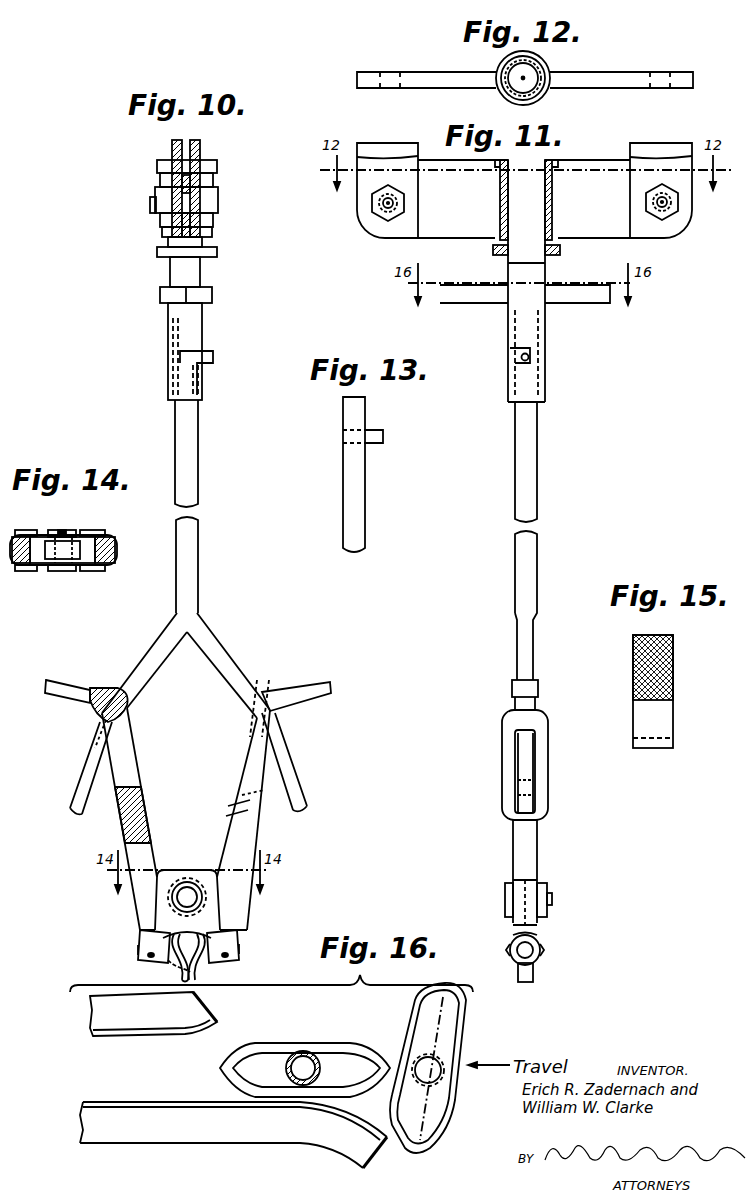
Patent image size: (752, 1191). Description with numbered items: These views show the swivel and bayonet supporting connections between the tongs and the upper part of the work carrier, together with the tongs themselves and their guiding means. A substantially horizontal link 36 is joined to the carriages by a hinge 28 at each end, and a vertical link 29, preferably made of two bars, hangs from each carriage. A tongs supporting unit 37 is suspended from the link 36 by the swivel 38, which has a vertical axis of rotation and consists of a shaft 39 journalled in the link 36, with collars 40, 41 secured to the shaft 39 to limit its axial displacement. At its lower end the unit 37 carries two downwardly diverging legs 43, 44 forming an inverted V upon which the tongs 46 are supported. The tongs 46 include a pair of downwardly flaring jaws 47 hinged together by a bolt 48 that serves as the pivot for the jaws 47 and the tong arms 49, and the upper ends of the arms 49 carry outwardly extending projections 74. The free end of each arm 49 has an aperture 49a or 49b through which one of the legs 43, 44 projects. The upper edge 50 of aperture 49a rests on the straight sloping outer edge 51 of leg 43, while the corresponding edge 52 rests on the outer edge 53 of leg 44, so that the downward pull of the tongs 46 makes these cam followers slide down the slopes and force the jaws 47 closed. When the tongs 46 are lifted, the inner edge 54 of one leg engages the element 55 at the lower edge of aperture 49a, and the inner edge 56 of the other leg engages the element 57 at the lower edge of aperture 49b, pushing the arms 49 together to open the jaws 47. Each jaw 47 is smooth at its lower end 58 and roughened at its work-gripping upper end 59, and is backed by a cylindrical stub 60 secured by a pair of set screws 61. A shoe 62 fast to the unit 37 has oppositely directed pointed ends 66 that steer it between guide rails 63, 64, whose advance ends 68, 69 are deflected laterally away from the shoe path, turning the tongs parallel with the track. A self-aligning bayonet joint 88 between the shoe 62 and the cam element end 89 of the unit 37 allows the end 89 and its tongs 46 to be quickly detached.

In FIG. 10, the hinge 28 is at (146, 209).
In FIG. 11, the hinge 28 is at (353, 213).
In FIG. 10, the vertical link 29 is at (190, 154).
In FIG. 11, the vertical link 29 is at (380, 160).
In FIG. 10, the horizontal link 36 is at (212, 232).
In FIG. 11, the horizontal link 36 is at (582, 175).
In FIG. 10, the tongs supporting unit 37 is at (206, 466).
In FIG. 11, the tongs supporting unit 37 is at (510, 469).
In FIG. 16, the tongs supporting unit 37 is at (286, 1068).
In FIG. 10, the swivel 38 is at (212, 150).
In FIG. 11, the swivel 38 is at (554, 159).
In FIG. 10, the swivel shaft 39 is at (190, 276).
In FIG. 12, the swivel shaft 39 is at (545, 63).
In FIG. 11, the swivel shaft 39 is at (540, 275).
In FIG. 10, the collar 40 is at (215, 160).
In FIG. 11, the collar 40 is at (560, 165).
In FIG. 10, the collar 41 is at (157, 252).
In FIG. 11, the collar 41 is at (560, 254).
In FIG. 10, the leg 43 is at (88, 763).
In FIG. 10, the leg 44 is at (292, 782).
In FIG. 11, the leg 44 is at (518, 792).
In FIG. 10, the tongs 46 is at (130, 912).
In FIG. 11, the tongs 46 is at (498, 843).
In FIG. 10, the jaw 47 is at (180, 968).
In FIG. 11, the jaw 47 is at (533, 975).
In FIG. 15, the jaw 47 is at (628, 706).
In FIG. 10, the bolt 48 is at (187, 893).
In FIG. 11, the bolt 48 is at (505, 895).
In FIG. 14, the bolt 48 is at (62, 563).
In FIG. 10, the tong arm 49 is at (228, 858).
In FIG. 11, the tong arm 49 is at (527, 850).
In FIG. 14, the tong arm 49 is at (103, 533).
In FIG. 10, the aperture 49a is at (125, 764).
In FIG. 10, the aperture 49b is at (248, 762).
In FIG. 11, the aperture 49b is at (538, 757).
In FIG. 10, the upper aperture edge 50 is at (125, 690).
In FIG. 10, the outer edge of leg 51 is at (142, 665).
In FIG. 10, the upper aperture edge 52 is at (262, 688).
In FIG. 11, the upper aperture edge 52 is at (515, 735).
In FIG. 10, the outer edge of leg 53 is at (228, 664).
In FIG. 10, the inner edge of leg 54 is at (140, 717).
In FIG. 10, the lower aperture edge 55 is at (144, 789).
In FIG. 10, the inner edge of leg 56 is at (232, 716).
In FIG. 10, the lower aperture edge 57 is at (236, 790).
In FIG. 11, the lower aperture edge 57 is at (540, 782).
In FIG. 15, the lower end of jaw 58 is at (662, 722).
In FIG. 15, the upper end of jaw 59 is at (633, 650).
In FIG. 10, the cylindrical stub 60 is at (138, 949).
In FIG. 11, the cylindrical stub 60 is at (533, 948).
In FIG. 15, the cylindrical stub 60 is at (676, 655).
In FIG. 10, the set screw 61 is at (148, 956).
In FIG. 11, the set screw 61 is at (506, 950).
In FIG. 10, the shoe 62 is at (160, 296).
In FIG. 11, the shoe 62 is at (482, 297).
In FIG. 16, the shoe 62 is at (303, 1043).
In FIG. 16, the guide rail 63 is at (90, 1122).
In FIG. 16, the guide rail 64 is at (95, 1020).
In FIG. 11, the pointed end 66 is at (438, 285).
In FIG. 16, the pointed end 66 is at (220, 1068).
In FIG. 16, the advance end of rail 68 is at (365, 1128).
In FIG. 16, the advance end of rail 69 is at (216, 1026).
In FIG. 10, the projection 74 is at (60, 683).
In FIG. 11, the projection 74 is at (512, 688).
In FIG. 10, the bayonet joint 88 is at (215, 356).
In FIG. 11, the bayonet joint 88 is at (504, 354).
In FIG. 10, the cam element end 89 is at (200, 538).
In FIG. 11, the cam element end 89 is at (535, 543).
In FIG. 13, the cam element end 89 is at (358, 505).